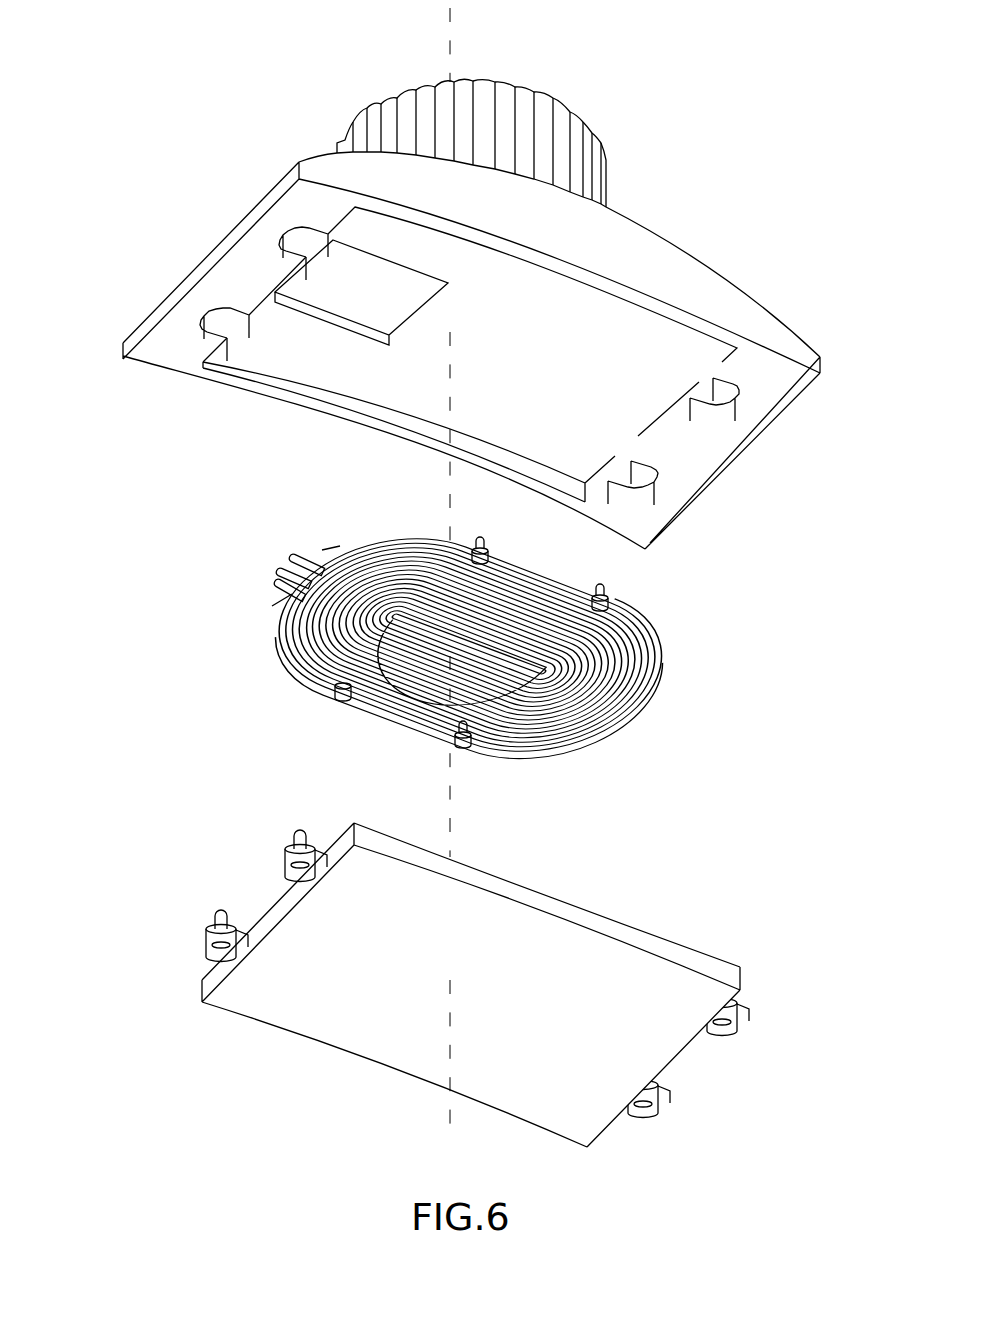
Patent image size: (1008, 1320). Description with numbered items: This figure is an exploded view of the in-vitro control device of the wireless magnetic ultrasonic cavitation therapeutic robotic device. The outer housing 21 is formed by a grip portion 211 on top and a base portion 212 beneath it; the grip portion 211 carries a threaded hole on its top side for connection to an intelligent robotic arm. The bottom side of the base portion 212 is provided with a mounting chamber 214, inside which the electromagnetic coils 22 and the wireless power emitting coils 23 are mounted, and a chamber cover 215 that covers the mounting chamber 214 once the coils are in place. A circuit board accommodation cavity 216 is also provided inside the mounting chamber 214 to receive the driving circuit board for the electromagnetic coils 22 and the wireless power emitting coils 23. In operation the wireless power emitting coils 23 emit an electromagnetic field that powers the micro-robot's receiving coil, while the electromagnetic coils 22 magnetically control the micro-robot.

The outer housing 21 is at (810, 167).
The grip portion 211 is at (573, 140).
The base portion 212 is at (687, 247).
The mounting chamber 214 is at (403, 380).
The chamber cover 215 is at (378, 1017).
The circuit board accommodation cavity 216 is at (358, 293).
The electromagnetic coils 22 is at (647, 668).
The wireless power emitting coils 23 is at (432, 647).